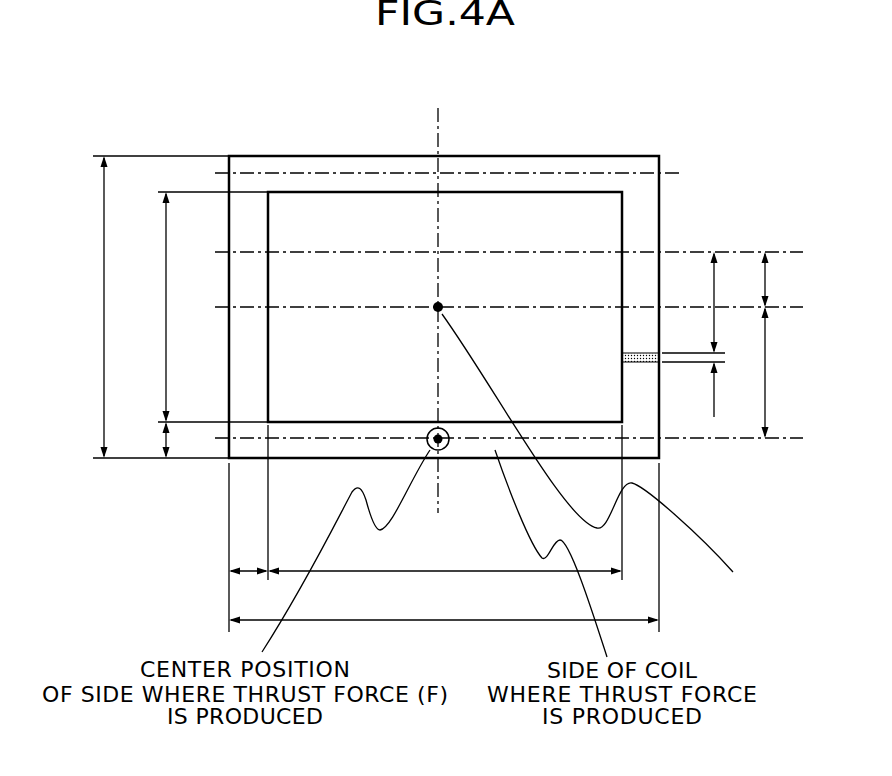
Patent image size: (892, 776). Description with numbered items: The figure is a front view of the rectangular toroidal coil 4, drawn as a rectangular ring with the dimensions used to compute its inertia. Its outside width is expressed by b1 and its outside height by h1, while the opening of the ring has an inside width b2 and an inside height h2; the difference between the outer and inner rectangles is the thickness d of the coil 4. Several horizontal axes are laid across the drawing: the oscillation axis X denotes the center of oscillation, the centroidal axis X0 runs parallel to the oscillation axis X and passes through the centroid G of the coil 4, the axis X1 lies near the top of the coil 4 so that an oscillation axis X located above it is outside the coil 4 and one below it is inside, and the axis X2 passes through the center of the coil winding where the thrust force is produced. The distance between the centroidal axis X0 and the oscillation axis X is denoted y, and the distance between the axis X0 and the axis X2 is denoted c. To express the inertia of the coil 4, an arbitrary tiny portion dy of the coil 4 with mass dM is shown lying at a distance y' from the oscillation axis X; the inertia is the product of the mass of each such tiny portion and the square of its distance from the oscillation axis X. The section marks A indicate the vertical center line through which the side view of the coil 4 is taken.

The rectangular toroidal coil 4 is at (604, 156).
The centroid G is at (597, 452).
The section line A- A is at (441, 119).
The oscillation axis X is at (519, 251).
The centroidal axis X0 is at (523, 308).
The axis X1 is at (463, 175).
The axis X2 is at (523, 440).
The outside height h1 is at (154, 307).
The inside height h2 is at (204, 307).
The outside width b1 is at (444, 606).
The inside width b2 is at (445, 557).
The thickness of the coil d is at (206, 498).
The distance between axis X0 and axis X2 c is at (757, 372).
The distance between axis X0 and oscillation axis X y is at (758, 279).
The distance from the oscillation axis X to tiny portion dy y' is at (707, 302).
The tiny portion dy is at (701, 389).